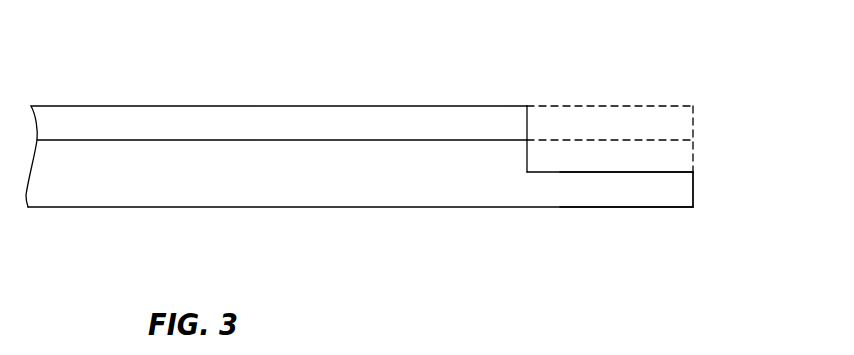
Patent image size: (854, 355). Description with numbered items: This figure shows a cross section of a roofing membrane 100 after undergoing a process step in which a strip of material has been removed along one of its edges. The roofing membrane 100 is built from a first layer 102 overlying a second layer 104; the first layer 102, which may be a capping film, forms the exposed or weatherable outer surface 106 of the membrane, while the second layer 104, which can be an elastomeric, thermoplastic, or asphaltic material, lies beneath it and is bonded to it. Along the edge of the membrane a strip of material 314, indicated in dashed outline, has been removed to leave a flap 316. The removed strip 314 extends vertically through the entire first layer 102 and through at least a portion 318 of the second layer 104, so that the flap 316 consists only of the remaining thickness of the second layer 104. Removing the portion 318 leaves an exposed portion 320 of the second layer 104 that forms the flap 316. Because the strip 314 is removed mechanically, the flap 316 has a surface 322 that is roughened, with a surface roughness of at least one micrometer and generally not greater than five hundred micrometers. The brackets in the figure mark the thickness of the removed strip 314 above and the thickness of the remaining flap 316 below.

The roofing membrane 100 is at (167, 65).
The first layer 102 is at (342, 115).
The second layer 104 is at (108, 180).
The outer surface 106 is at (226, 105).
The strip of material 314 is at (702, 107).
The flap 316 is at (702, 174).
The portion of the second layer 318 is at (557, 158).
The exposed portion 320 is at (650, 185).
The surface 322 is at (593, 173).